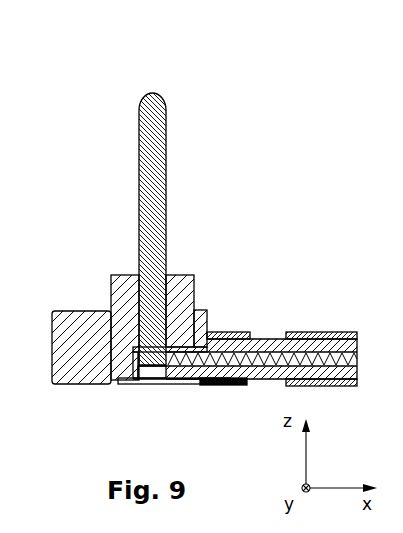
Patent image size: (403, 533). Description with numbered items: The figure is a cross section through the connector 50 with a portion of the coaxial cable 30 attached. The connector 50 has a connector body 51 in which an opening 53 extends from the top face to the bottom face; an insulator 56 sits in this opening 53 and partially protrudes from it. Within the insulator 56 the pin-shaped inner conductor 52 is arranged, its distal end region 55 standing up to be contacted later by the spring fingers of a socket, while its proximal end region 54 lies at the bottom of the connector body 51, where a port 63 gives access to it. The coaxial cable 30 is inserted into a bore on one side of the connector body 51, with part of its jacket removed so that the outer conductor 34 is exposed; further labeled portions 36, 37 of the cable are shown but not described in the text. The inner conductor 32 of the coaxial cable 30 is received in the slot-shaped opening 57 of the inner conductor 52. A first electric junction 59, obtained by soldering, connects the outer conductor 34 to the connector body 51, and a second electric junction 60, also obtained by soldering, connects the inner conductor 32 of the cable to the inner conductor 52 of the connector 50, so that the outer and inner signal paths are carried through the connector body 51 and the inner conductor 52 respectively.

The connector 50 is at (99, 61).
The connector body 51 is at (100, 327).
The inner conductor 52 is at (160, 223).
The opening 53 is at (170, 395).
The proximal end region 54 is at (124, 373).
The distal end region 55 is at (176, 124).
The insulator 56 is at (127, 297).
The opening 57 is at (157, 368).
The first electric junction 59 is at (238, 386).
The second electric junction 60 is at (188, 381).
The port 63 is at (157, 383).
The coaxial cable 30 is at (309, 294).
The inner conductor of the coaxial cable 32 is at (333, 353).
The outer conductor of the coaxial cable 34 is at (290, 384).
The top conductor pad 36 is at (310, 335).
The conductor layer 37 is at (257, 333).